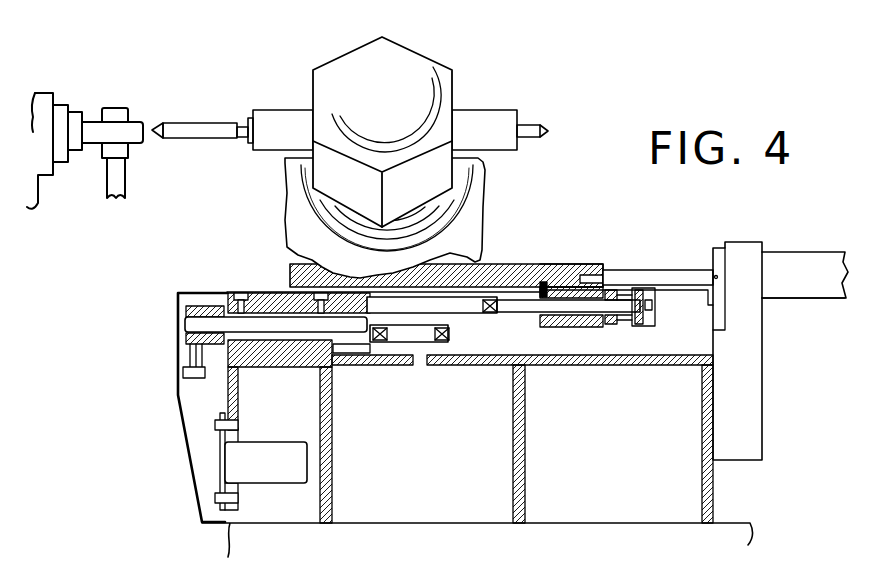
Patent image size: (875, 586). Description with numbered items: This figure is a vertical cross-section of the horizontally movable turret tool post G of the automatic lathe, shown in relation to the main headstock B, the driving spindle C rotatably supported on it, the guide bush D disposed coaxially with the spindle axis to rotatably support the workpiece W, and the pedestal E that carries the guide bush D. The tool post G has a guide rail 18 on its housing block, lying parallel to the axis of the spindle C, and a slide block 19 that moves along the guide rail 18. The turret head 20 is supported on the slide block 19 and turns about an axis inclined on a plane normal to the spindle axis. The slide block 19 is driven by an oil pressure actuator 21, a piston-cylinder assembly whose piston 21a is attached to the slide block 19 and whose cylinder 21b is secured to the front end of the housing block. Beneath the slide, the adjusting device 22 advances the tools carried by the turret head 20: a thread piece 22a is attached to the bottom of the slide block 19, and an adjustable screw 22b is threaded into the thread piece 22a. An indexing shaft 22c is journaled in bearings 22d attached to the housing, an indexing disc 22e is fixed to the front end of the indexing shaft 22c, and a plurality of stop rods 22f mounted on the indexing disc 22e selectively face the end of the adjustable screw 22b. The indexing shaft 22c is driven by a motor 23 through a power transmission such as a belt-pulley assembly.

The turret head 20 is at (425, 33).
The slide block 19 is at (502, 268).
The guide rail 18 is at (518, 293).
The oil pressure actuator 21 is at (806, 236).
The piston 21a is at (668, 262).
The cylinder 21b is at (803, 298).
The adjusting device 22 is at (465, 401).
The thread piece 22a is at (578, 328).
The adjustable screw 22b is at (517, 314).
The indexing shaft 22c is at (285, 335).
The bearings 22d is at (246, 345).
The indexing disc 22e is at (343, 360).
The stop rods 22f is at (430, 345).
The motor 23 is at (286, 478).
The turret tool post G is at (610, 232).
The workpiece W is at (131, 126).
The main headstock B is at (41, 178).
The driving spindle C is at (68, 163).
The guide bush D is at (129, 152).
The pedestal E is at (125, 177).